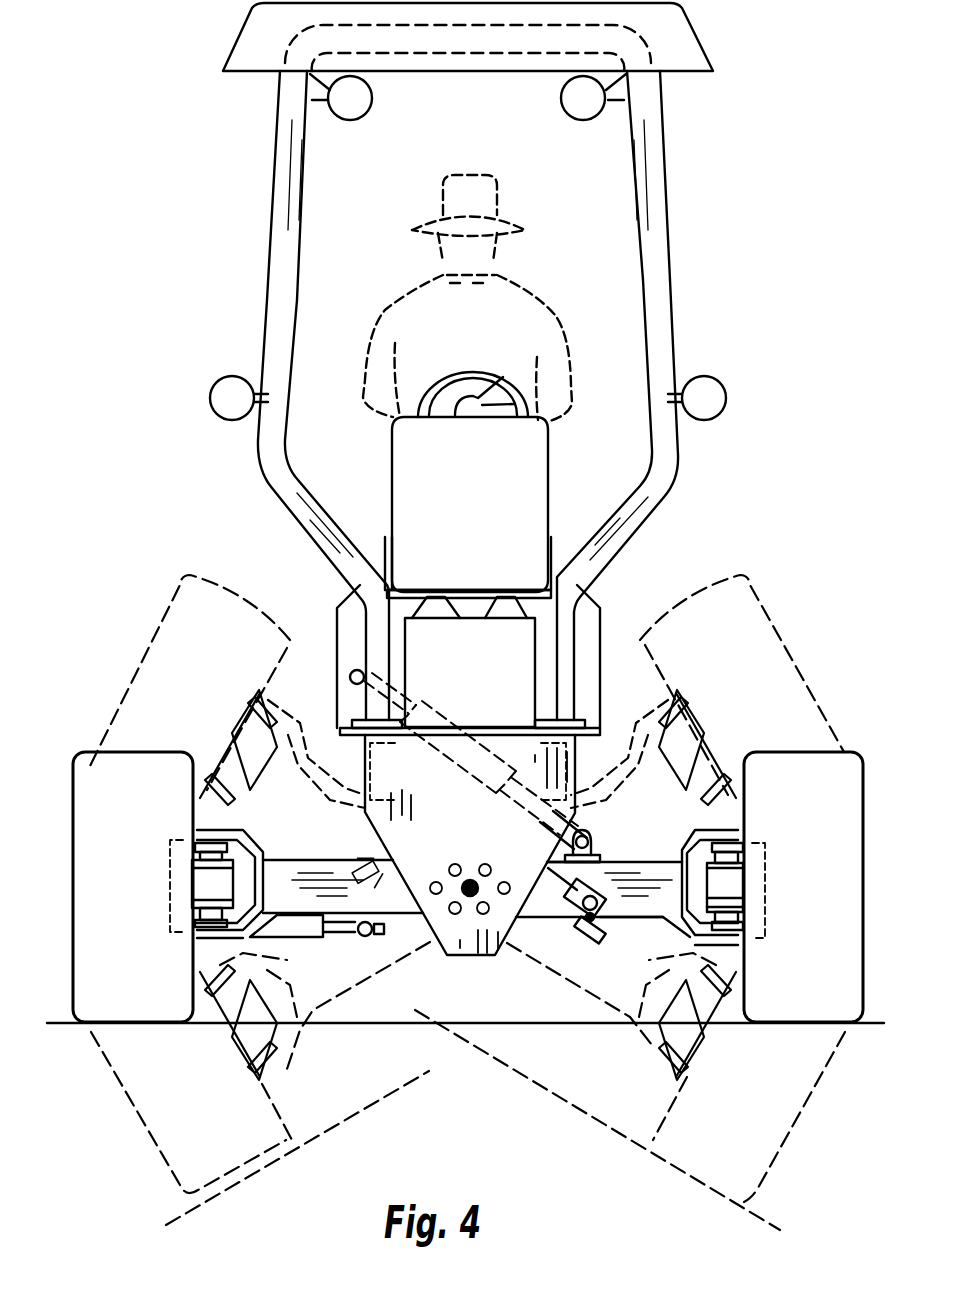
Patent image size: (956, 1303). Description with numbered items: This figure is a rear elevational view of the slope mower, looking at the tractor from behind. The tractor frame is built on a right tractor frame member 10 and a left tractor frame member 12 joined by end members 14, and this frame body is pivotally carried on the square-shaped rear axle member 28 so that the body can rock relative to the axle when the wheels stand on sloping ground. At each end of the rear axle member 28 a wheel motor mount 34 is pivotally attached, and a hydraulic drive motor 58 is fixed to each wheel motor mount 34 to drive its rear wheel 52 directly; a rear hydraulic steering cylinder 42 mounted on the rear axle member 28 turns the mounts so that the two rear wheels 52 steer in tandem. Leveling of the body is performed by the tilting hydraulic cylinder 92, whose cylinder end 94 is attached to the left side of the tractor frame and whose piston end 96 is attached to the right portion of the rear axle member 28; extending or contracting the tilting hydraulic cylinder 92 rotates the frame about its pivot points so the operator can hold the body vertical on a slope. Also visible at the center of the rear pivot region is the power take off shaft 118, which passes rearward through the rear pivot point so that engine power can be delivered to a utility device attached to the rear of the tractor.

The right tractor frame member 10 is at (590, 770).
The left tractor frame member 12 is at (365, 785).
The end members 14 is at (427, 782).
The rear axle member 28 is at (642, 903).
The wheel motor mount 34 is at (195, 843).
The rear hydraulic steering cylinder 42 is at (300, 943).
The rear wheels 52 is at (162, 763).
The hydraulic drive motor 58 is at (250, 882).
The tilting hydraulic cylinder 92 is at (423, 703).
The cylinder end 94 is at (350, 676).
The piston end 96 is at (590, 832).
The power take off shaft 118 is at (470, 896).